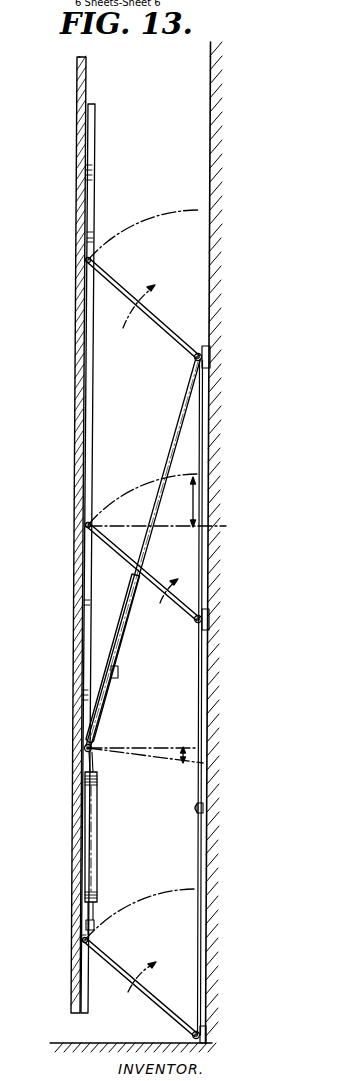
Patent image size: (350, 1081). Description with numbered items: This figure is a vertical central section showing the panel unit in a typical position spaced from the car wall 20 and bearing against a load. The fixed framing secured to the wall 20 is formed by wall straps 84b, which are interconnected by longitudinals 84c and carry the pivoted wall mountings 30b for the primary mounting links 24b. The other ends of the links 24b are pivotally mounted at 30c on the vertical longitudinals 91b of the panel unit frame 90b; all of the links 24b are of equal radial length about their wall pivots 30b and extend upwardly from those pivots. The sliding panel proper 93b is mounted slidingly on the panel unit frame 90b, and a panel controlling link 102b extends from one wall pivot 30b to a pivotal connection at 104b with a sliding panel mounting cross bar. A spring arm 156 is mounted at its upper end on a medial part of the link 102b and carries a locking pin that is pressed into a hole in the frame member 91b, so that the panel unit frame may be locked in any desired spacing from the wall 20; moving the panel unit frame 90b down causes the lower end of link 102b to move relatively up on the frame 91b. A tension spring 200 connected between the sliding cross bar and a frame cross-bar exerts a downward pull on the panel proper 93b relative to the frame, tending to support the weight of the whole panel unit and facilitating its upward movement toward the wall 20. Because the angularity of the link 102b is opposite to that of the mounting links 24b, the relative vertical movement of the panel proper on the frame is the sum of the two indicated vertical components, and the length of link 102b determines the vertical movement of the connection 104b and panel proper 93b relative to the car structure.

The wall 20 is at (214, 851).
The primary mounting link 24b is at (157, 331).
The pivoted wall mounting 30b is at (206, 357).
The link pivot on panel unit frame 30c is at (92, 259).
The wall strap 84b is at (212, 370).
The longitudinal 84c is at (203, 809).
The panel unit frame 90b is at (84, 482).
The vertical longitudinal of panel unit frame 91b is at (87, 404).
The sliding panel proper 93b is at (78, 152).
The panel controlling link 102b is at (167, 441).
The pivotal connection 104b is at (82, 749).
The spring arm 156 is at (114, 656).
The tension spring 200 is at (97, 833).